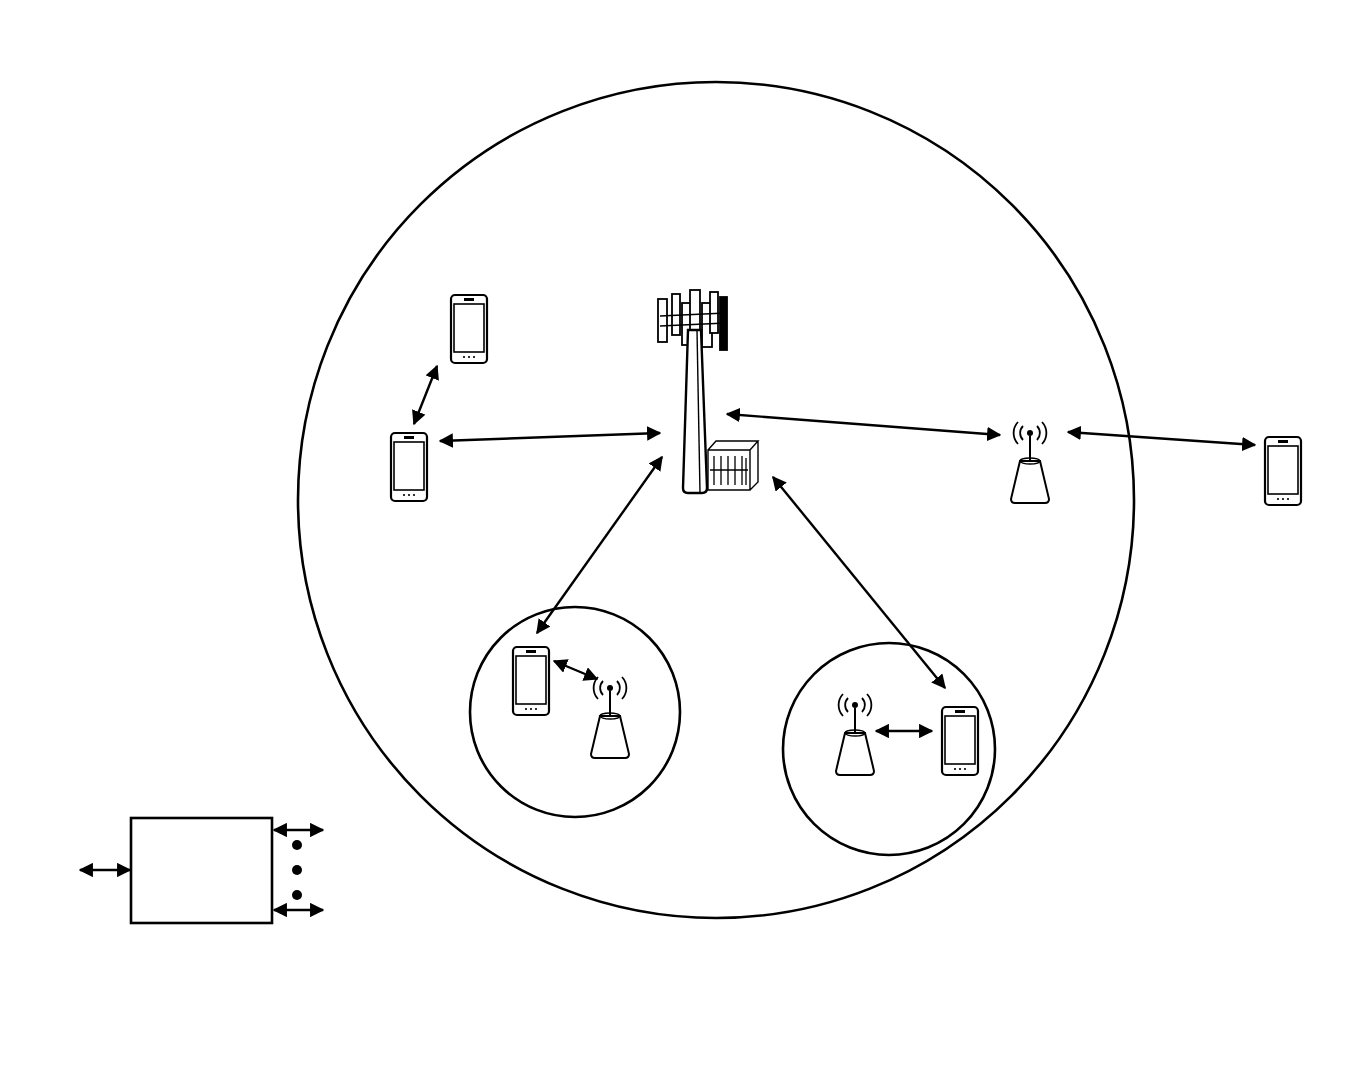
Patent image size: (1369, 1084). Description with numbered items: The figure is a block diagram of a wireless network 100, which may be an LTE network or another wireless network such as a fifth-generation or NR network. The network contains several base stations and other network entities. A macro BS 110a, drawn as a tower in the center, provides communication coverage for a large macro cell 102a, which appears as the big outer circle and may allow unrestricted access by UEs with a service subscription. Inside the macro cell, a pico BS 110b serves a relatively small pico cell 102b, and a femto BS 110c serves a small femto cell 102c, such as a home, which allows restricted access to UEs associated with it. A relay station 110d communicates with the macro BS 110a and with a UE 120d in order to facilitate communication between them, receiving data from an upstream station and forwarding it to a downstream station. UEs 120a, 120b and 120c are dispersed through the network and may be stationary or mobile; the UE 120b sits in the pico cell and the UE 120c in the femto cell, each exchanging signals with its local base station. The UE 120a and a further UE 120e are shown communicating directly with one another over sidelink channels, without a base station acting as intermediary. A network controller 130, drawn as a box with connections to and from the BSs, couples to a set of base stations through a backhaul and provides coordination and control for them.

The wireless network 100 is at (185, 78).
The macro cell 102a is at (993, 192).
The pico cell 102b is at (670, 656).
The femto cell 102c is at (830, 658).
The macro BS 110a is at (700, 280).
The pico BS 110b is at (634, 748).
The femto BS 110c is at (838, 762).
The relay station 110d is at (1032, 424).
The UE 120a is at (380, 474).
The UE 120b is at (517, 714).
The UE 120c is at (944, 776).
The UE 120d is at (1296, 434).
The UE 120e is at (446, 316).
The network controller 130 is at (202, 816).